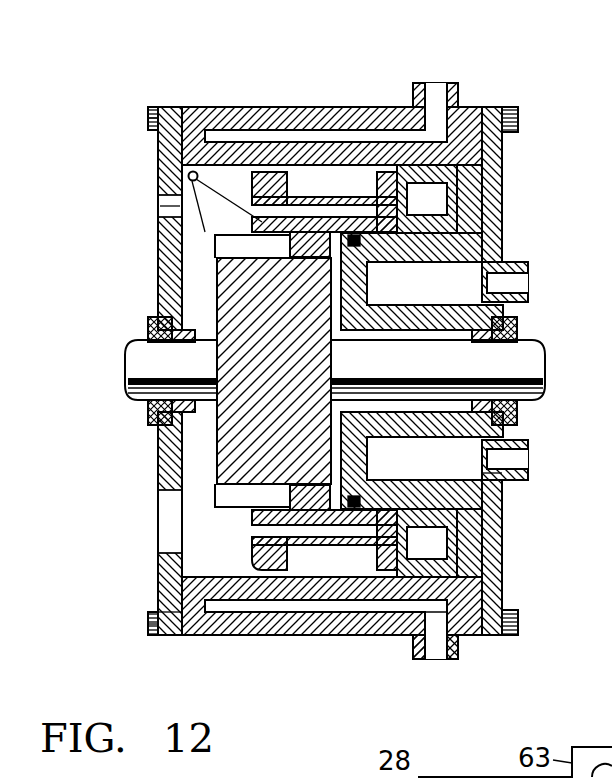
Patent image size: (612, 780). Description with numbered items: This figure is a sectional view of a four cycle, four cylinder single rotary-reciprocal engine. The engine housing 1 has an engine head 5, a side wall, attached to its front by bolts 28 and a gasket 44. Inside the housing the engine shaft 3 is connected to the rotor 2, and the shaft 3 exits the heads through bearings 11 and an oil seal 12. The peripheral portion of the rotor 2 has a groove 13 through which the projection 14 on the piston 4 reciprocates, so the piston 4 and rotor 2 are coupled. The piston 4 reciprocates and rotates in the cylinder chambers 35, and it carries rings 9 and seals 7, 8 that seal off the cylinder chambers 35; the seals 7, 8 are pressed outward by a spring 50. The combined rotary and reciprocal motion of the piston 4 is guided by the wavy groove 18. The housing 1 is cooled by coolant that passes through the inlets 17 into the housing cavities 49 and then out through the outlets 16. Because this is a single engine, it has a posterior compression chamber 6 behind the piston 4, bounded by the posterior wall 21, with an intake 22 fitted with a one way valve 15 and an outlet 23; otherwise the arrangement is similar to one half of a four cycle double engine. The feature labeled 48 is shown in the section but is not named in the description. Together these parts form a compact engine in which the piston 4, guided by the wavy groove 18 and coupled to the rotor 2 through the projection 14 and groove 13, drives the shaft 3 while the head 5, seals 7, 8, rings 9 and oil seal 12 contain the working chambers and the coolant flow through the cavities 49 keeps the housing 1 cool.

The engine housing 1 is at (193, 112).
The rotor 2 is at (260, 425).
The engine shaft 3 is at (163, 366).
The piston 4 is at (268, 175).
The engine head 5 is at (490, 158).
The posterior compression chamber 6 is at (228, 178).
The seal 7 is at (476, 236).
The seal 8 is at (470, 203).
The rings 9 is at (348, 238).
The bearings 11 is at (151, 330).
The oil seal 12 is at (156, 318).
The groove 13 is at (189, 174).
The projection 14 is at (288, 243).
The one way valve 15 is at (198, 210).
The outlets 16 is at (432, 133).
The inlets 17 is at (516, 453).
The wavy groove 18 is at (350, 186).
The posterior wall 21 is at (153, 107).
The intake 22 is at (166, 224).
The outlet 23 is at (173, 535).
The bolts 28 is at (152, 611).
The cylinder chambers 35 is at (488, 185).
The gasket 44 is at (493, 108).
The stator shoulder 48 is at (481, 501).
The housing cavities 49 is at (512, 114).
The spring 50 is at (474, 636).